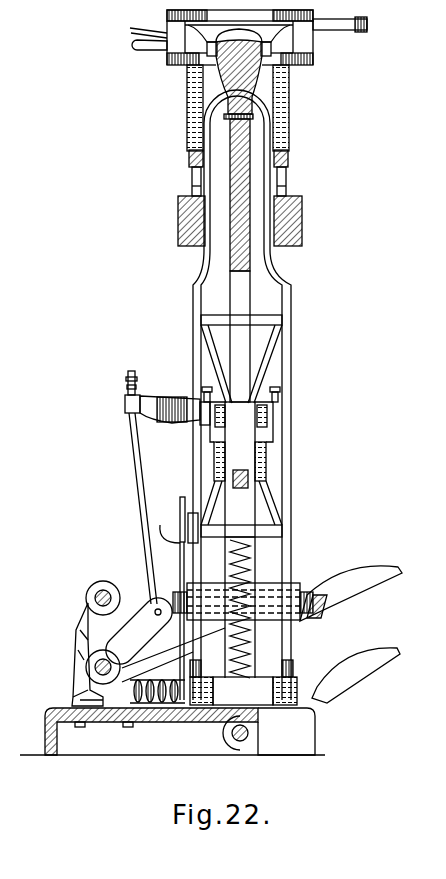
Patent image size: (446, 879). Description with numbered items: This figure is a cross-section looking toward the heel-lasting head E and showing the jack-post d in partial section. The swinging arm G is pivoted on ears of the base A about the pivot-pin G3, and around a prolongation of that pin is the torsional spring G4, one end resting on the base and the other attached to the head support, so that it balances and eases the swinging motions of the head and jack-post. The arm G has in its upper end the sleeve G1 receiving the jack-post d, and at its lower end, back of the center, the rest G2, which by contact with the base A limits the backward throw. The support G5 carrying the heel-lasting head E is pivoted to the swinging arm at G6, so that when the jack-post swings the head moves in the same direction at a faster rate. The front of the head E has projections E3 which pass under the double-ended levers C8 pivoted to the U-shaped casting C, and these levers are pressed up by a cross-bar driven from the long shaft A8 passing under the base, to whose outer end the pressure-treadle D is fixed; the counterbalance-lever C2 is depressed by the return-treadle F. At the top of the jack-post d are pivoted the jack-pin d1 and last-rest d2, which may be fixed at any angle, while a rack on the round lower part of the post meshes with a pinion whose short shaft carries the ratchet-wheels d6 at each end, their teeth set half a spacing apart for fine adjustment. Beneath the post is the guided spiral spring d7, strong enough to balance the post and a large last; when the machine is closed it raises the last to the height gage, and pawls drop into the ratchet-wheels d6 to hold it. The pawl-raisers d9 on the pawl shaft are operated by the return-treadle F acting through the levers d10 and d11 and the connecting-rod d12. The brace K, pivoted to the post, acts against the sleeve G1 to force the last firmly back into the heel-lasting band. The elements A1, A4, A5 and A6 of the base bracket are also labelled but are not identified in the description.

The heel-lasting head E is at (248, 37).
The jack-pin d1 is at (256, 87).
The last-rest d2 is at (240, 118).
The jack-post d is at (243, 300).
The projections E3 is at (188, 116).
The double-ended levers C8 is at (190, 160).
The counterbalance-lever C2 is at (192, 188).
The U-shaped casting C is at (178, 236).
The support G5 is at (291, 325).
The lever d10 is at (182, 402).
The pawl-raisers d9 is at (212, 430).
The ratchet-wheels d6 is at (215, 456).
The brace K is at (250, 482).
The sleeve G1 is at (245, 525).
The connecting-rod d12 is at (135, 508).
The swinging arm G is at (176, 496).
The spiral spring d7 is at (240, 578).
The rest G2 is at (252, 660).
The pivot G6 is at (313, 601).
The return-treadle F is at (351, 581).
The pressure-treadle D is at (356, 675).
The pivot-pin G3 is at (298, 690).
The base A is at (172, 728).
The long shaft A8 is at (236, 742).
The upper roller A4 is at (105, 587).
The lower roller A5 is at (87, 651).
The bracket A6 is at (80, 622).
The foot A' A1 is at (87, 680).
The lever d11 is at (139, 631).
The torsional spring G4 is at (163, 706).